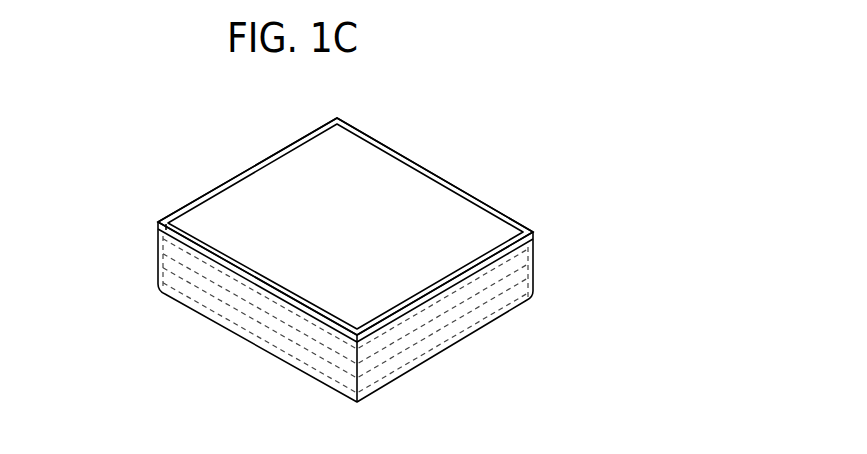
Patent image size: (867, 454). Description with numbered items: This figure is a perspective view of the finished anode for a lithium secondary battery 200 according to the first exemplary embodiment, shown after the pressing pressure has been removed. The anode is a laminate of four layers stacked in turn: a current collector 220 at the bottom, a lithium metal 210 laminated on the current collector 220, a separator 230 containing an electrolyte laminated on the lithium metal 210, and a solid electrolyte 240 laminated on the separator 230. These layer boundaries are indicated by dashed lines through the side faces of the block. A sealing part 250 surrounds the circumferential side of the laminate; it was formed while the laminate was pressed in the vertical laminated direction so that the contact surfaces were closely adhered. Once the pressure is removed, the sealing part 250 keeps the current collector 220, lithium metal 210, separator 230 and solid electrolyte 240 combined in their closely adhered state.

The anode for a lithium secondary battery 200 is at (480, 156).
The sealing part 250 is at (200, 196).
The solid electrolyte 240 is at (160, 223).
The separator 230 is at (160, 243).
The lithium metal 210 is at (160, 261).
The current collector 220 is at (160, 281).